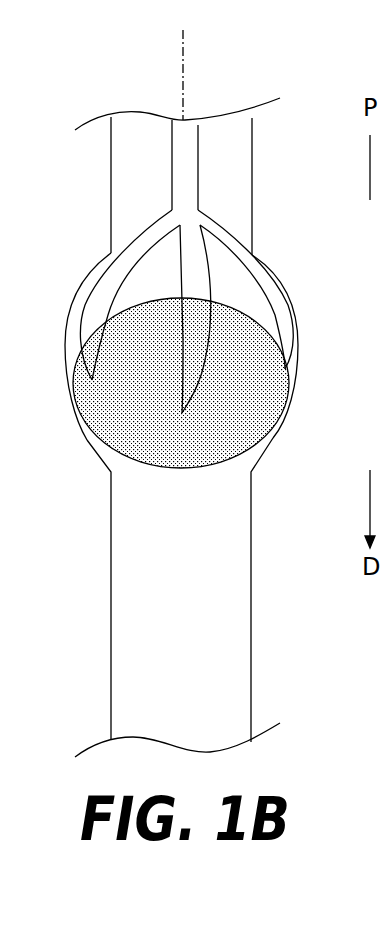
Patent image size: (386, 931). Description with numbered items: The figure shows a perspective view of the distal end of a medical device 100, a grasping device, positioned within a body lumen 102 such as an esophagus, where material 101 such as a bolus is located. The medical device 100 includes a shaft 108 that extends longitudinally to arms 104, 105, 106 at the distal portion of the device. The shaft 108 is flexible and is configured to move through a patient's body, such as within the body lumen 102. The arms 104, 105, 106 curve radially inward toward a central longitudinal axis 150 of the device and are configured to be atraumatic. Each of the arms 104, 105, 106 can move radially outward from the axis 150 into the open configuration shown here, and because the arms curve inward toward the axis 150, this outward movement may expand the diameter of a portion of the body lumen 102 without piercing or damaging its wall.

The medical device 100 is at (170, 259).
The material 101 is at (267, 400).
The body lumen 102 is at (111, 653).
The arm 104 is at (272, 302).
The arm 105 is at (236, 311).
The arm 106 is at (97, 293).
The shaft 108 is at (193, 160).
The central longitudinal axis 150 is at (185, 63).